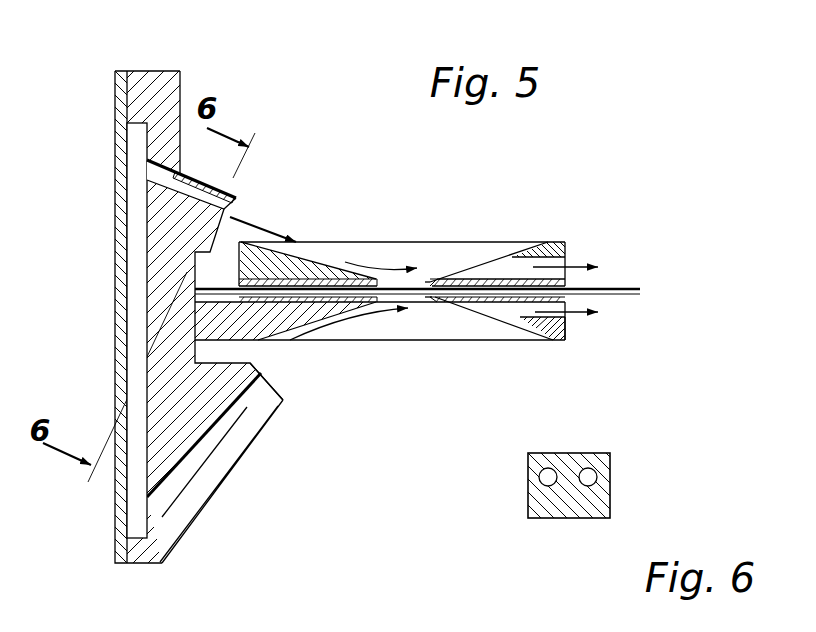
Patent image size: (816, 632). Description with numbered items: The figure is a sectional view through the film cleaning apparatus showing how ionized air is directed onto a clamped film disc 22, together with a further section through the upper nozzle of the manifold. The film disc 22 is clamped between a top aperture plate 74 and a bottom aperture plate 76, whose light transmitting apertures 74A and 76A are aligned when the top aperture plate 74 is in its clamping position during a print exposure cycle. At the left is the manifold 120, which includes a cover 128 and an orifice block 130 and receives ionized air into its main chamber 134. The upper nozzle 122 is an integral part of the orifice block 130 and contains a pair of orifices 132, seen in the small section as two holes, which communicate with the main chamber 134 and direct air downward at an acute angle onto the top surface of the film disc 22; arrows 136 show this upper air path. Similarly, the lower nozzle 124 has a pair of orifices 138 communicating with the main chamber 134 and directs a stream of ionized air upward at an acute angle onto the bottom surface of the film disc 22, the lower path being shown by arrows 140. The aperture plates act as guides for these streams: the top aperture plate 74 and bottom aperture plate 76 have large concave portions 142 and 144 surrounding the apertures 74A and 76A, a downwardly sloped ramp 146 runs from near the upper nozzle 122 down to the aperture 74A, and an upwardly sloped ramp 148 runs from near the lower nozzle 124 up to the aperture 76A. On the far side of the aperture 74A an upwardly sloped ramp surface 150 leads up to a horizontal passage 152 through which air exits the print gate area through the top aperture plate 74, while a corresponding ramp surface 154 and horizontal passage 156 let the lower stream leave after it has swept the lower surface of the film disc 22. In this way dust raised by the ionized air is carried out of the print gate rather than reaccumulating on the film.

In FIG. 5, the film disc 22 is at (641, 291).
In FIG. 5, the top aperture plate 74 is at (400, 240).
In FIG. 5, the light transmitting aperture 74A is at (429, 281).
In FIG. 5, the bottom aperture plate 76 is at (400, 342).
In FIG. 5, the light transmitting aperture 76A is at (424, 299).
In FIG. 5, the second manifold 120 is at (117, 505).
In FIG. 5, the upper nozzle 122 is at (202, 172).
In FIG. 6, the upper nozzle 122 is at (618, 480).
In FIG. 5, the lower nozzle 124 is at (261, 438).
In FIG. 5, the cover 128 is at (115, 183).
In FIG. 5, the orifice block 130 is at (153, 70).
In FIG. 5, the orifices 132 is at (237, 197).
In FIG. 6, the orifices 132 is at (587, 468).
In FIG. 5, the main chamber 134 is at (136, 273).
In FIG. 5, the arrows 136 is at (266, 230).
In FIG. 5, the orifices 138 is at (271, 393).
In FIG. 5, the arrows 140 is at (362, 323).
In FIG. 5, the concave portion 142 is at (500, 241).
In FIG. 5, the concave portion 144 is at (469, 331).
In FIG. 5, the ramp 146 is at (322, 264).
In FIG. 5, the upwardly sloped ramp 148 is at (320, 342).
In FIG. 5, the upwardly sloped ramp surface 150 is at (546, 241).
In FIG. 5, the horizontal passage 152 is at (566, 258).
In FIG. 5, the ramp surface 154 is at (520, 338).
In FIG. 5, the horizontal passage 156 is at (568, 325).